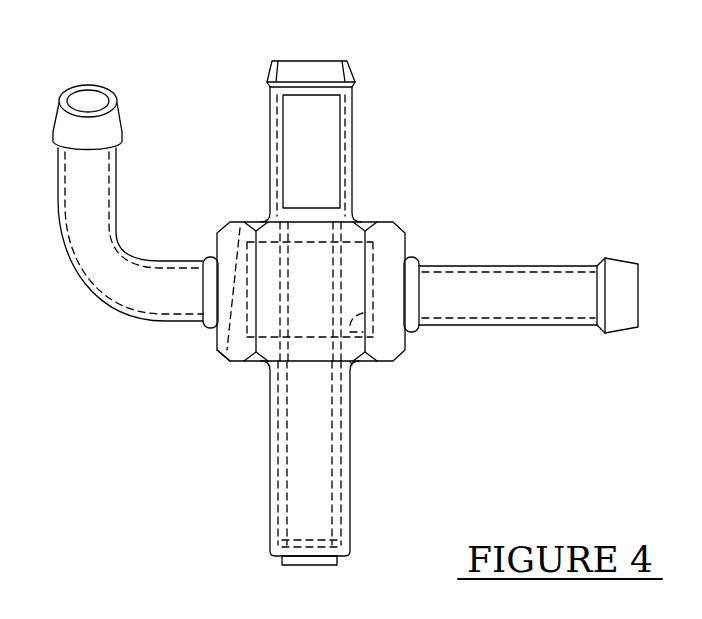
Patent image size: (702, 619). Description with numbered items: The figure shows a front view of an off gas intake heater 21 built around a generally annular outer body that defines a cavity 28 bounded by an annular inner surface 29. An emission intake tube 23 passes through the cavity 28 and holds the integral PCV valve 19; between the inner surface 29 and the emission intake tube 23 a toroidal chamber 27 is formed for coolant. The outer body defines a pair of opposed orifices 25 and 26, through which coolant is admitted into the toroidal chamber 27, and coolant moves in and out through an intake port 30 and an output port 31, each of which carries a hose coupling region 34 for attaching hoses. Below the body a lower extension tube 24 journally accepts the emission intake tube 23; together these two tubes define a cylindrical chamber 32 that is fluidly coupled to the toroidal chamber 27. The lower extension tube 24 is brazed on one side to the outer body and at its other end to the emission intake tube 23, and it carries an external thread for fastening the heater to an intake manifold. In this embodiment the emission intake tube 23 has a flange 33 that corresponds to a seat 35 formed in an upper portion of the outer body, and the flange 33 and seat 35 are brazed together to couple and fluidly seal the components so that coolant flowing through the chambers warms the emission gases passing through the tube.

The integral PCV valve 19 is at (295, 135).
The off gas intake heater 21 is at (458, 128).
The emission intake tube 23 is at (348, 143).
The lower extension tube 24 is at (345, 530).
The orifice 25 is at (407, 242).
The orifice 26 is at (203, 257).
The toroidal chamber 27 is at (368, 322).
The cavity 28 is at (390, 277).
The annular inner surface 29 is at (352, 365).
The intake port 30 is at (123, 283).
The output port 31 is at (535, 282).
The cylindrical chamber 32 is at (280, 518).
The flange 33 is at (238, 223).
The hose coupling region 34 is at (340, 75).
The seat 35 is at (218, 355).